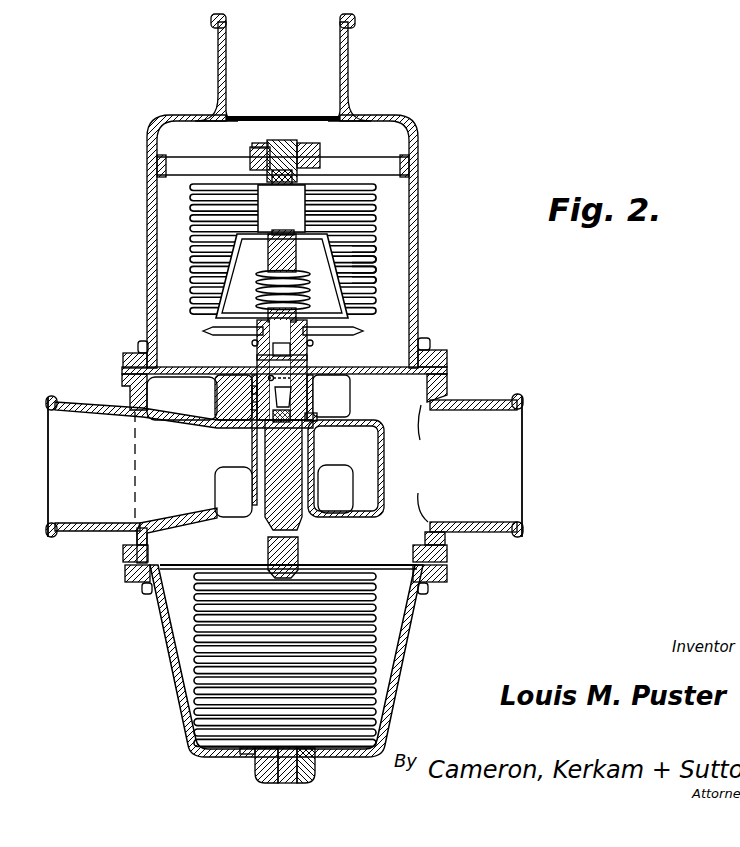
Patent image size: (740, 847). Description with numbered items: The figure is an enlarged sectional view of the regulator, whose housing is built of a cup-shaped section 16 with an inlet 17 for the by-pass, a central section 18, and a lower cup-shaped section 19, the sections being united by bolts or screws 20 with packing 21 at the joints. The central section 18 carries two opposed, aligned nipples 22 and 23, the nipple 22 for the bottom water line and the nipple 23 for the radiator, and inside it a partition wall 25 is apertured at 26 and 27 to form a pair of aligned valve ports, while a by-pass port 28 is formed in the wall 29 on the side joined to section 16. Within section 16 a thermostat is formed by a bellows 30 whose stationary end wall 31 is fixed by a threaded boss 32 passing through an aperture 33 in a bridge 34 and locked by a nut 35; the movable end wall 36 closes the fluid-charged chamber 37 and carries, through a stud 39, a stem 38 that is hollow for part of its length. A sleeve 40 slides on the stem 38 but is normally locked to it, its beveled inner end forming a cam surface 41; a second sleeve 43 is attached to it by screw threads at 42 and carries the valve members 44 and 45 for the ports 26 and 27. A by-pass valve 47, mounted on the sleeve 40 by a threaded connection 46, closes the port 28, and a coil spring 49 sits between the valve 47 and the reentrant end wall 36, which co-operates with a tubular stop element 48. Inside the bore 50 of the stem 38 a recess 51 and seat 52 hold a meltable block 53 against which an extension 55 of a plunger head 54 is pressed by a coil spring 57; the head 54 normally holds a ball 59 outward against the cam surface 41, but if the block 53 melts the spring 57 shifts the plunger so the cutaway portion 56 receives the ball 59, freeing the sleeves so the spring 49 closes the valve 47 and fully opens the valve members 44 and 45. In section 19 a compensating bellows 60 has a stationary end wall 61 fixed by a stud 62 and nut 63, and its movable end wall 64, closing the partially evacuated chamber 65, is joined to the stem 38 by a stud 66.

The cup-shaped section 16 is at (418, 252).
The inlet 17 is at (327, 50).
The central section 18 is at (447, 381).
The lower cup-shaped section 19 is at (410, 666).
The bolts or screws 20 is at (429, 344).
The packing 21 is at (447, 354).
The nipple 22 is at (512, 466).
The nipple 23 is at (58, 470).
The partition wall 25 is at (381, 482).
The valve port 26 is at (352, 413).
The valve port 27 is at (350, 524).
The by-pass port 28 is at (356, 374).
The wall 29 is at (142, 341).
The bellows 30 is at (370, 249).
The stationary end wall 31 is at (322, 176).
The threaded boss 32 is at (290, 140).
The aperture 33 is at (250, 160).
The bridge 34 is at (305, 152).
The nut 35 is at (258, 147).
The movable end wall 36 is at (370, 276).
The chamber 37 is at (340, 217).
The stem 38 is at (226, 338).
The stud 39 is at (278, 240).
The sleeve 40 is at (291, 352).
The cam surface 41 is at (357, 377).
The screw threads 42 is at (255, 380).
The sleeve 43 is at (255, 448).
The valve member 44 is at (228, 424).
The valve member 45 is at (210, 526).
The threaded connection 46 is at (256, 354).
The by-pass valve 47 is at (208, 329).
The tubular stop element 48 is at (304, 197).
The coil spring 49 is at (256, 287).
The interior bore 50 is at (289, 366).
The recess 51 is at (274, 437).
The seat 52 is at (272, 430).
The block 53 is at (284, 404).
The head 54 is at (256, 406).
The extension 55 is at (284, 386).
The cutaway portion 56 is at (262, 360).
The coil spring 57 is at (298, 271).
The ball 59 is at (256, 392).
The bellows 60 is at (222, 688).
The stationary end wall 61 is at (250, 748).
The stud 62 is at (264, 780).
The nut 63 is at (313, 778).
The movable end wall 64 is at (313, 568).
The chamber 65 is at (340, 632).
The stud 66 is at (270, 563).